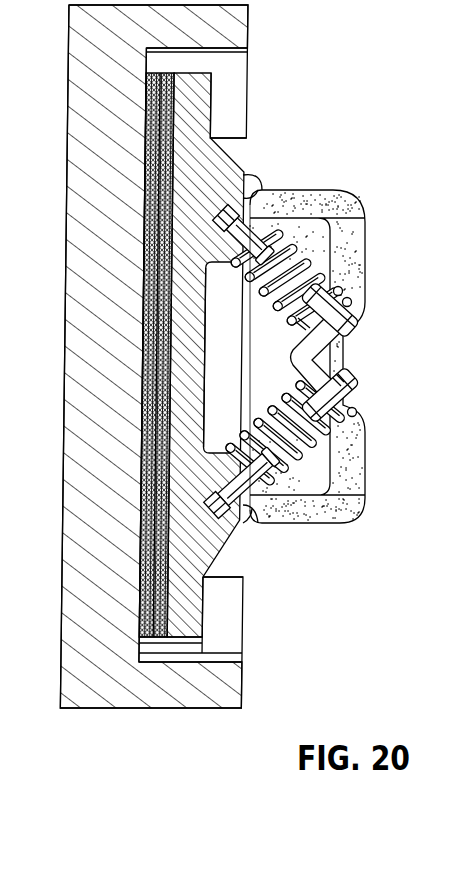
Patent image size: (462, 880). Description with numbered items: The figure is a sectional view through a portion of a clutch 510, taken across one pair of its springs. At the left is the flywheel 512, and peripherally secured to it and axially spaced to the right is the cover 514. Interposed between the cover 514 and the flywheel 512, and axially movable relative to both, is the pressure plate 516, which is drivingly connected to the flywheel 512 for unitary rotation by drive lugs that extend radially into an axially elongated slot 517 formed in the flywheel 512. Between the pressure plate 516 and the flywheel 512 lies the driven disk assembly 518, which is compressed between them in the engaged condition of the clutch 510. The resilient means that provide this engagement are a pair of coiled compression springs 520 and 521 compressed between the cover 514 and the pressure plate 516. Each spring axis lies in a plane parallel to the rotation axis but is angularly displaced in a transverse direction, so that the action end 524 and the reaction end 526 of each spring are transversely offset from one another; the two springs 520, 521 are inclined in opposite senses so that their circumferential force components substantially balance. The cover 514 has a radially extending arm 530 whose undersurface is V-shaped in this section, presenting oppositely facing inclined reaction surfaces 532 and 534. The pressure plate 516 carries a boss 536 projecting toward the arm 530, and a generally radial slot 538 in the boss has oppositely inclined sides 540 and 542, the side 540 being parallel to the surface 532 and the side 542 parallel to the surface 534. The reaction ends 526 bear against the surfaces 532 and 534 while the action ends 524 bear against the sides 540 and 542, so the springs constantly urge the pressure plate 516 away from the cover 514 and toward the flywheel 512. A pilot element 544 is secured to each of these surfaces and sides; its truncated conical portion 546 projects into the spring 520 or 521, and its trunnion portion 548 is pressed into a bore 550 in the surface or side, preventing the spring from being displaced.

The clutch 510 is at (311, 150).
The flywheel 512 is at (78, 25).
The cover 514 is at (362, 203).
The pressure plate 516 is at (216, 103).
The axially elongated slot 517 is at (245, 148).
The driven disk assembly 518 is at (160, 76).
The coiled compression spring 520 is at (333, 268).
The coiled compression spring 521 is at (306, 455).
The action end 524 is at (251, 192).
The reaction end 526 is at (351, 302).
The arm 530 is at (352, 316).
The reaction surface 532 is at (300, 322).
The reaction surface 534 is at (300, 385).
The boss 536 is at (242, 542).
The slot 538 is at (213, 338).
The inclined side 540 is at (251, 201).
The inclined side 542 is at (228, 487).
The pilot element 544 is at (292, 262).
The truncated conical portion 546 is at (342, 290).
The trunnion portion 548 is at (344, 392).
The bore 550 is at (340, 380).